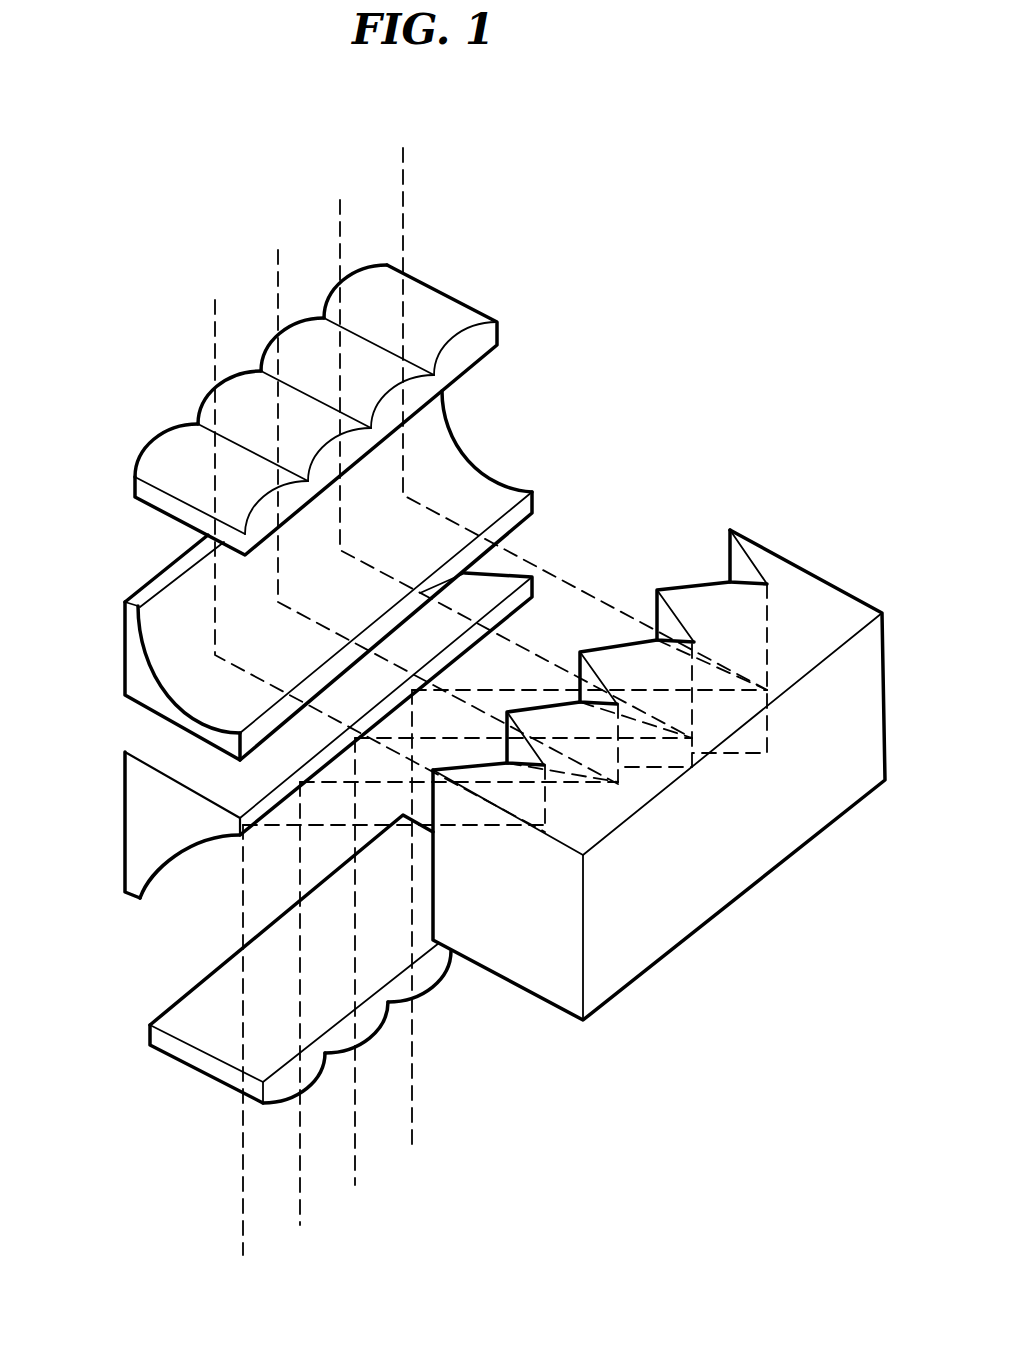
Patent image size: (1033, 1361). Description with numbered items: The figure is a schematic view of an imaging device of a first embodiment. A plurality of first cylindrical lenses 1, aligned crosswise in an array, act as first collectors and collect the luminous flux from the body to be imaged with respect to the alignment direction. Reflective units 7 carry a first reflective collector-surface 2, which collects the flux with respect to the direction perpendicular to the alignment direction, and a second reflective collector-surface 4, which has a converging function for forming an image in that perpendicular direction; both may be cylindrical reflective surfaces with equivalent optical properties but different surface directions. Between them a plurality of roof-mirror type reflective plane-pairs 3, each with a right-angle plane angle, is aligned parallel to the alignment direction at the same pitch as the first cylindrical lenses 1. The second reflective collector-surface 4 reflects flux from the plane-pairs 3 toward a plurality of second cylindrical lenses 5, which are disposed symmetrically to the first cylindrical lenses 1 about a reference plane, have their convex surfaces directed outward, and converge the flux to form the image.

The first cylindrical lenses 1 is at (452, 285).
The first reflective collector-surface 2 is at (498, 445).
The roof-mirror type reflective plane-pairs 3 is at (691, 583).
The second reflective collector-surface 4 is at (178, 866).
The second cylindrical lenses 5 is at (312, 1098).
The reflective units 7 is at (123, 650).